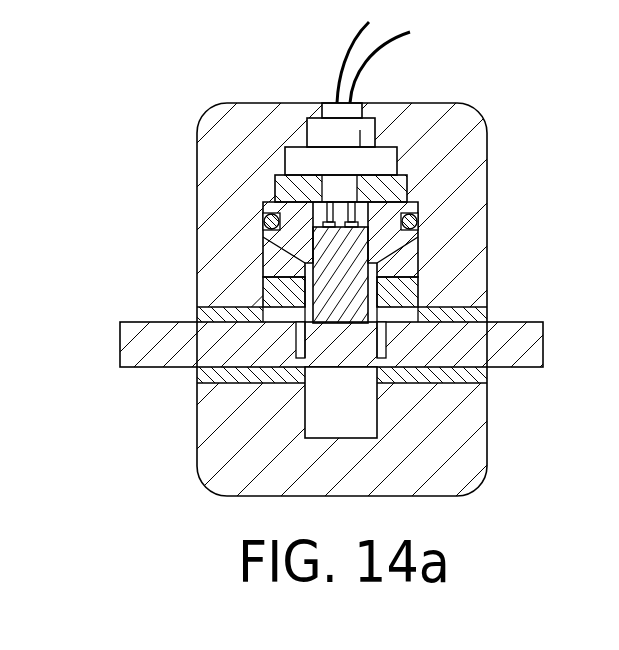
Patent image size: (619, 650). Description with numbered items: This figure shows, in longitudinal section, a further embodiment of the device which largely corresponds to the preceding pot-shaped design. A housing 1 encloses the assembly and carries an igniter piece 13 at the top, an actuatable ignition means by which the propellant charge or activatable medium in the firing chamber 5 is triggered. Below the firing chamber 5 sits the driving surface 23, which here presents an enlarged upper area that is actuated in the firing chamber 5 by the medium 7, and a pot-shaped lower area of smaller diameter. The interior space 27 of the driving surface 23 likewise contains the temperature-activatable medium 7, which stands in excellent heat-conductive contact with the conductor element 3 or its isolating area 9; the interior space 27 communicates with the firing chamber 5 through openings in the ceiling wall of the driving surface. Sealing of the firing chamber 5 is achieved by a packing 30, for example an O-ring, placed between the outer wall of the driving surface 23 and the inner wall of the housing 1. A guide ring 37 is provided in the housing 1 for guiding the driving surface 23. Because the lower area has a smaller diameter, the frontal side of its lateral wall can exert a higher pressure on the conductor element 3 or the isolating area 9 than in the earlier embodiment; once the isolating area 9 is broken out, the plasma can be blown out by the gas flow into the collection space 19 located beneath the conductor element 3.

The housing 1 is at (472, 140).
The conductor element 3 is at (517, 343).
The firing chamber 5 is at (285, 175).
The temperature activatable medium 7 is at (397, 188).
The isolating area 9 is at (345, 352).
The igniter piece 13 is at (365, 130).
The collection space 19 is at (327, 405).
The driving surface 23 is at (398, 240).
The interior space 27 is at (327, 291).
The packing 30 is at (422, 214).
The guide ring 37 is at (410, 290).